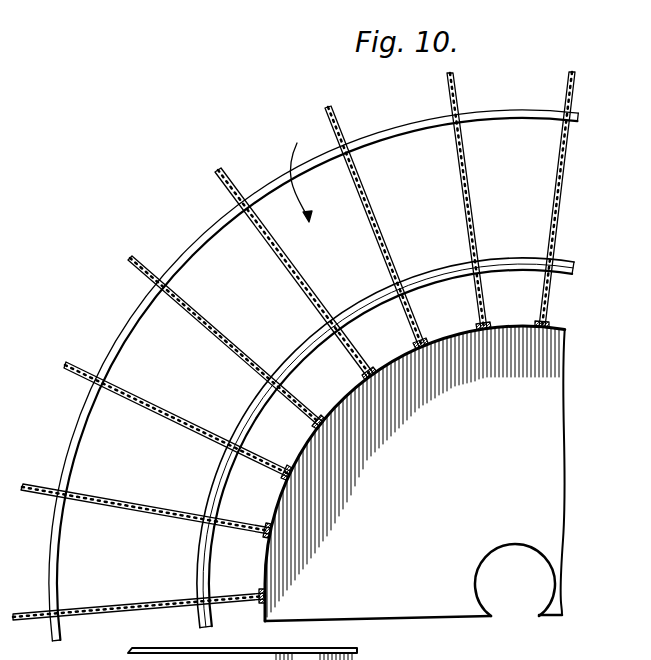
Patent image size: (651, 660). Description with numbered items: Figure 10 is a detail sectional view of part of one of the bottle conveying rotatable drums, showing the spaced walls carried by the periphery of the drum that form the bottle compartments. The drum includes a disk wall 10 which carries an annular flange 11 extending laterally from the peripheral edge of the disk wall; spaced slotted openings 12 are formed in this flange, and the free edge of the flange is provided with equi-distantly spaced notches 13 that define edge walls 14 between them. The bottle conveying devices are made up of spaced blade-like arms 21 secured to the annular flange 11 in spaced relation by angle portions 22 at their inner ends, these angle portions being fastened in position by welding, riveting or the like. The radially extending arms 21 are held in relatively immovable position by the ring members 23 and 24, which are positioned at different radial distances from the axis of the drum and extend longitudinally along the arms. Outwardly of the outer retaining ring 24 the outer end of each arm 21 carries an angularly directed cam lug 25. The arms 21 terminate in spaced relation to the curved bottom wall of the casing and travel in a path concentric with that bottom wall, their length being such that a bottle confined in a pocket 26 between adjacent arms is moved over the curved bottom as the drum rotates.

The disk wall 10 is at (440, 614).
The annular flange 11 is at (430, 345).
The slotted openings 12 is at (338, 393).
The notches 13 is at (10, 444).
The edge walls 14 is at (10, 524).
The blade-like arms 21 is at (386, 232).
The angle portions 22 is at (290, 456).
The ring member 23 is at (249, 417).
The ring member 24 is at (110, 364).
The cam lug 25 is at (0, 100).
The pocket 26 is at (285, 178).